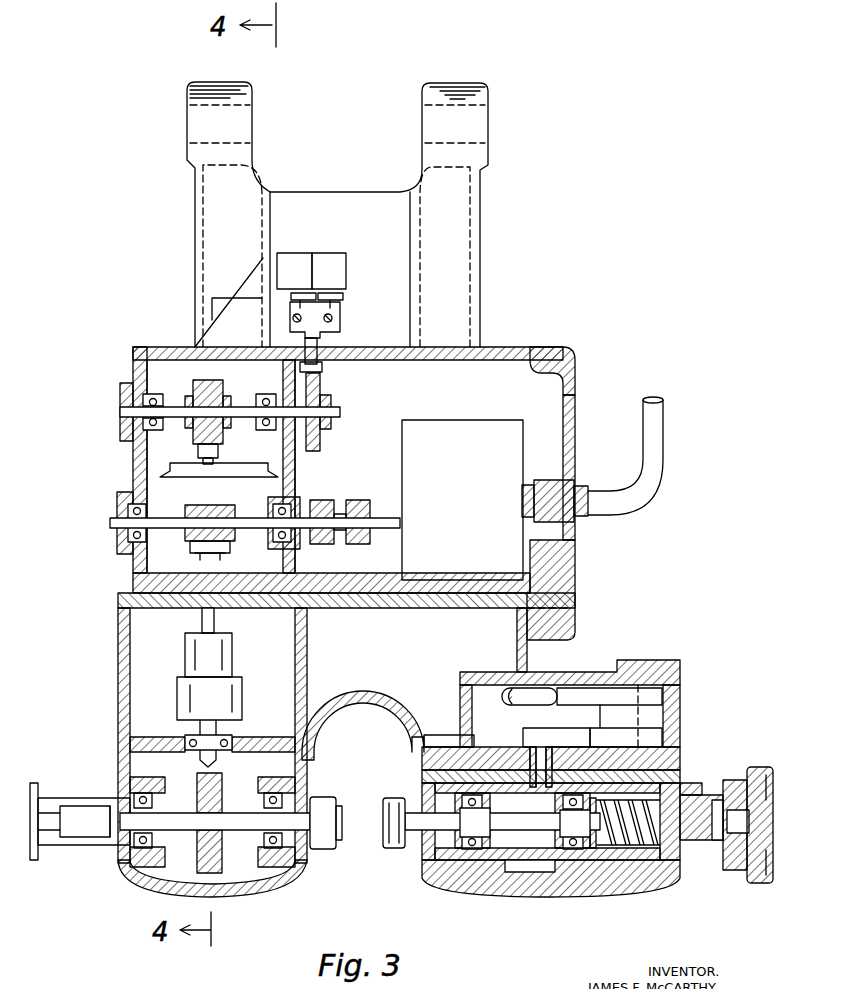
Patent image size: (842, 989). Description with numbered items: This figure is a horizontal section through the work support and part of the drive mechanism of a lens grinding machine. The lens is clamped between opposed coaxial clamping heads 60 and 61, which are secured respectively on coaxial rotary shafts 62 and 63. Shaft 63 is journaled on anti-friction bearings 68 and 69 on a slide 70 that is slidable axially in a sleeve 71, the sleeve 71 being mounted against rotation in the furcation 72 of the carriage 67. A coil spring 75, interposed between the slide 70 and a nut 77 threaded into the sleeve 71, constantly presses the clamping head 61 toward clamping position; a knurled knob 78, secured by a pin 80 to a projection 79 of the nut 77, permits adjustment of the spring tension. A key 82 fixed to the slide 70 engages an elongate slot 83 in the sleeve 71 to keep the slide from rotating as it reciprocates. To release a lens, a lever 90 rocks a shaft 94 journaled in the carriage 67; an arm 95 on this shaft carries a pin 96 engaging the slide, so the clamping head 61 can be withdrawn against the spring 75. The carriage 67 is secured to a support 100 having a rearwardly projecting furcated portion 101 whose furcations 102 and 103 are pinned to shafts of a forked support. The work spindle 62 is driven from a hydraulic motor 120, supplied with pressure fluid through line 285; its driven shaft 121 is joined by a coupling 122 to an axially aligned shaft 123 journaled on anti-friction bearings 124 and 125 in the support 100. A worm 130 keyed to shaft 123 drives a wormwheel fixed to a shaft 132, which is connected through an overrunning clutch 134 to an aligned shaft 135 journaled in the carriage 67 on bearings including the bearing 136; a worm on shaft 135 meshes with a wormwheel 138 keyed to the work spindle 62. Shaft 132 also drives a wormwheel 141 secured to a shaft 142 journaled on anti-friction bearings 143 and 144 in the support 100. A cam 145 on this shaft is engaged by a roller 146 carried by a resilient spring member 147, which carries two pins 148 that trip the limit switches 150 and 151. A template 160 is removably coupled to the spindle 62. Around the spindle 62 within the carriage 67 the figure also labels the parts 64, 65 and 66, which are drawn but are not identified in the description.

The clamping head 60 is at (322, 798).
The clamping head 61 is at (394, 798).
The rotary shaft 62 is at (250, 831).
The rotary shaft 63 is at (415, 830).
The bearing 64 is at (144, 793).
The bearing 65 is at (270, 793).
The housing bottom wall 66 is at (258, 888).
The carriage 67 is at (118, 704).
The anti-friction bearing 68 is at (470, 850).
The anti-friction bearing 69 is at (573, 850).
The slide 70 is at (596, 858).
The sleeve 71 is at (636, 868).
The furcation 72 is at (680, 762).
The coil spring 75 is at (670, 838).
The nut 77 is at (672, 792).
The knurled knob 78 is at (757, 768).
The projection 79 is at (711, 832).
The pin 80 is at (734, 782).
The key 82 is at (535, 872).
The elongate slot 83 is at (498, 862).
The lever 90 is at (512, 703).
The shaft 94 is at (570, 692).
The arm 95 is at (523, 737).
The pin 96 is at (530, 758).
The support 100 is at (572, 363).
The furcated portion 101 is at (486, 262).
The furcation 102 is at (213, 92).
The furcation 103 is at (455, 86).
The hydraulic motor 120 is at (465, 436).
The driven shaft 121 is at (368, 512).
The coupling 122 is at (368, 540).
The shaft 123 is at (128, 528).
The anti-friction bearing 124 is at (120, 520).
The anti-friction bearing 125 is at (292, 505).
The worm 130 is at (186, 536).
The shaft 132 is at (214, 622).
The overrunning clutch 134 is at (240, 692).
The shaft 135 is at (232, 723).
The anti-friction bearing 136 is at (186, 741).
The wormwheel 138 is at (200, 858).
The wormwheel 141 is at (222, 392).
The shaft 142 is at (170, 400).
The anti-friction bearing 143 is at (128, 408).
The anti-friction bearing 144 is at (264, 433).
The cam 145 is at (326, 402).
The roller 146 is at (322, 366).
The resilient spring member 147 is at (318, 347).
The pins 148 is at (292, 318).
The limit switch 150 is at (292, 262).
The limit switch 151 is at (333, 262).
The template 160 is at (36, 790).
The line 285 is at (662, 462).